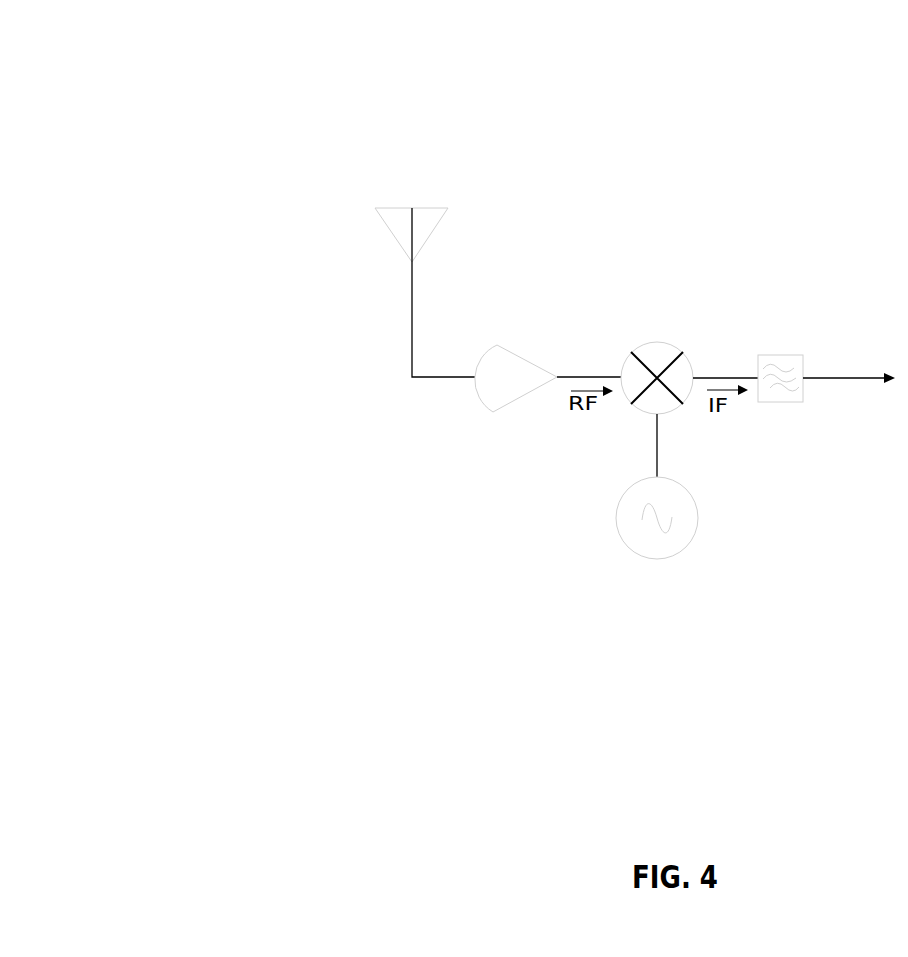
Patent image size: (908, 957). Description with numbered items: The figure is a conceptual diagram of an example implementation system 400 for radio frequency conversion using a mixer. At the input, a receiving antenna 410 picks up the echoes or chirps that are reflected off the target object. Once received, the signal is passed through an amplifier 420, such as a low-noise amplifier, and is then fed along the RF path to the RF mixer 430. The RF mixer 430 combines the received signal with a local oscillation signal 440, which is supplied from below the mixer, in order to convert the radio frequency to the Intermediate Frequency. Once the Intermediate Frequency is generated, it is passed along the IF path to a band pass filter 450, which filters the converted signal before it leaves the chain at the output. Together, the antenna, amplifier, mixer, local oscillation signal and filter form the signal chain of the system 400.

The implementation system 400 is at (255, 97).
The receiving antenna 410 is at (392, 207).
The amplifier 420 is at (496, 345).
The RF mixer 430 is at (657, 342).
The local oscillation signal 440 is at (627, 495).
The band pass filter 450 is at (780, 355).